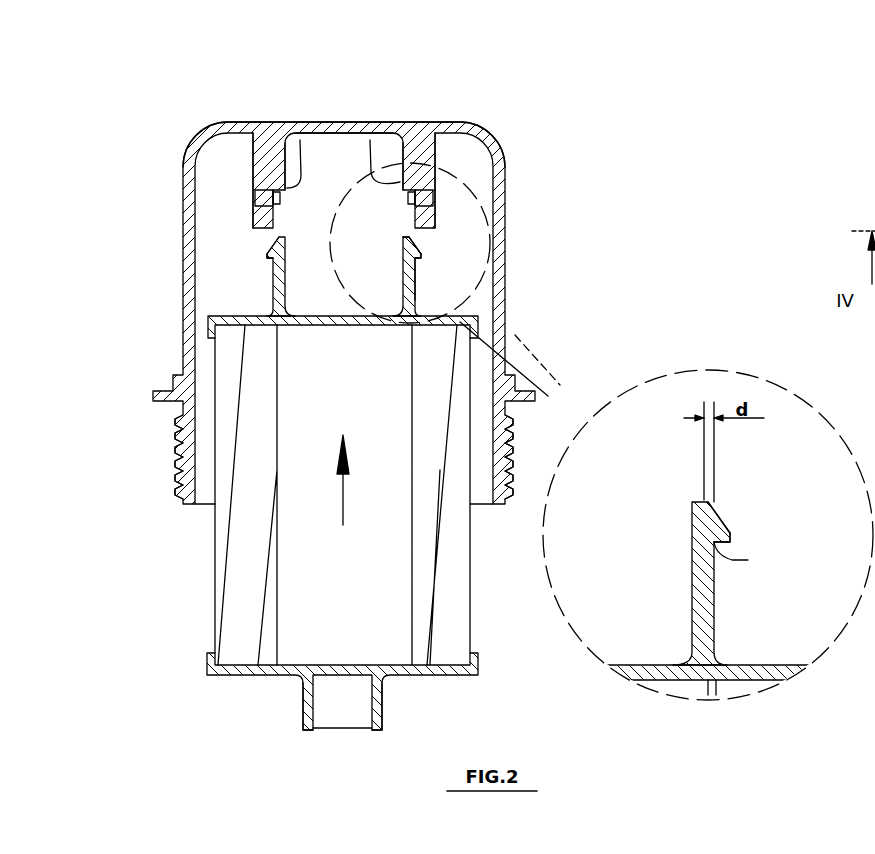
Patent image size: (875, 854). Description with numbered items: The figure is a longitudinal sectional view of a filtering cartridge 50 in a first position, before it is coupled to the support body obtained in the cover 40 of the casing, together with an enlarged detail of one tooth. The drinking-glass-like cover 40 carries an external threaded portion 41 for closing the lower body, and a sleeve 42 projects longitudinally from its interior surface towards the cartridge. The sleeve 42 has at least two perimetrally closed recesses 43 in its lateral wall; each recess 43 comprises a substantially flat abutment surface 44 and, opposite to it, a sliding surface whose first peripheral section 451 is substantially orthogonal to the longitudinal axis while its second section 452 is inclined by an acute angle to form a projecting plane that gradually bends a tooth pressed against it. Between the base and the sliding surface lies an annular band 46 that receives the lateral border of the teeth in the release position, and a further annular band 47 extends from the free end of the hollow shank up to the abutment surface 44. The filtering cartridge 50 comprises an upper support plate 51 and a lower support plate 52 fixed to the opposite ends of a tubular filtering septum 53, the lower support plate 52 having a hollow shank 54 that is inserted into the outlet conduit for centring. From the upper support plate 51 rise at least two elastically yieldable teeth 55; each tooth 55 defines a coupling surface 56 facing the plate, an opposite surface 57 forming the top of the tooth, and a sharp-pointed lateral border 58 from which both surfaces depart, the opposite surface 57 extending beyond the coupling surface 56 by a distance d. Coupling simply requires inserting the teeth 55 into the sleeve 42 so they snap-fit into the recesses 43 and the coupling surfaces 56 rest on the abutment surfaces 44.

The upper cover 40 is at (183, 362).
The external threaded portion 41 is at (180, 473).
The sleeve 42 is at (482, 126).
The recess 43 is at (268, 188).
The abutment surface 44 is at (263, 200).
The first peripheral section 451 is at (276, 190).
The second section 452 is at (370, 140).
The annular band 46 is at (398, 172).
The further annular band 47 is at (423, 247).
The filtering cartridge 50 is at (207, 710).
The upper support plate 51 is at (512, 371).
The lower support plate 52 is at (240, 670).
The filtering septum 53 is at (262, 529).
The hollow shank 54 is at (310, 728).
The tooth 55 is at (403, 272).
The coupling surface 56 is at (272, 262).
The opposite surface 57 is at (268, 250).
The lateral border 58 is at (266, 258).